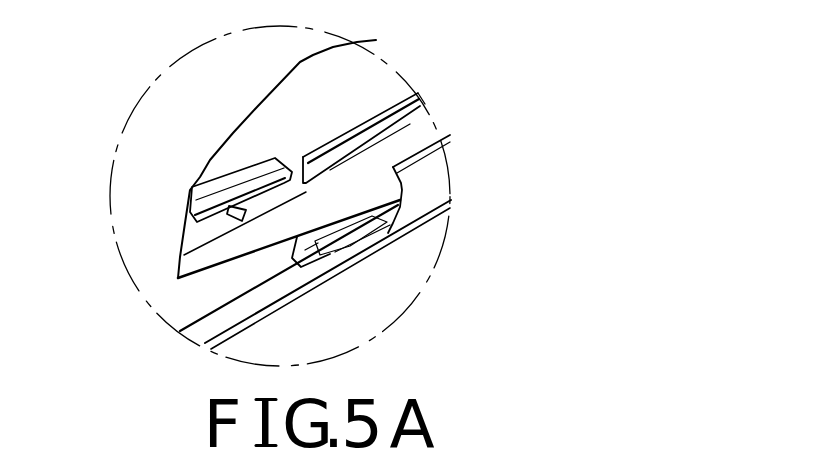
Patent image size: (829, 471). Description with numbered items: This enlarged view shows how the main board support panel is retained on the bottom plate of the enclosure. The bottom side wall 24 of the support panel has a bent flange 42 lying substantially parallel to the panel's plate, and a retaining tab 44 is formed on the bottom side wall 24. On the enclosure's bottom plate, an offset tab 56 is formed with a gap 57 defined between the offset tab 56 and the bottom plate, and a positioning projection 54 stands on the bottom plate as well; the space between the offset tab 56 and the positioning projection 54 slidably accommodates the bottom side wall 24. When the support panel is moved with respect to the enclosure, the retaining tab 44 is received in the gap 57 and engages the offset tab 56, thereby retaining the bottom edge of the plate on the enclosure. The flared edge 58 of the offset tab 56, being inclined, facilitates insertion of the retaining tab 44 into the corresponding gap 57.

The bottom side wall 24 is at (459, 175).
The bent flange 42 is at (430, 122).
The retaining tab 44 is at (392, 97).
The positioning projection 54 is at (410, 273).
The offset tab 56 is at (173, 138).
The gap 57 is at (168, 248).
The flared edge 58 is at (140, 163).